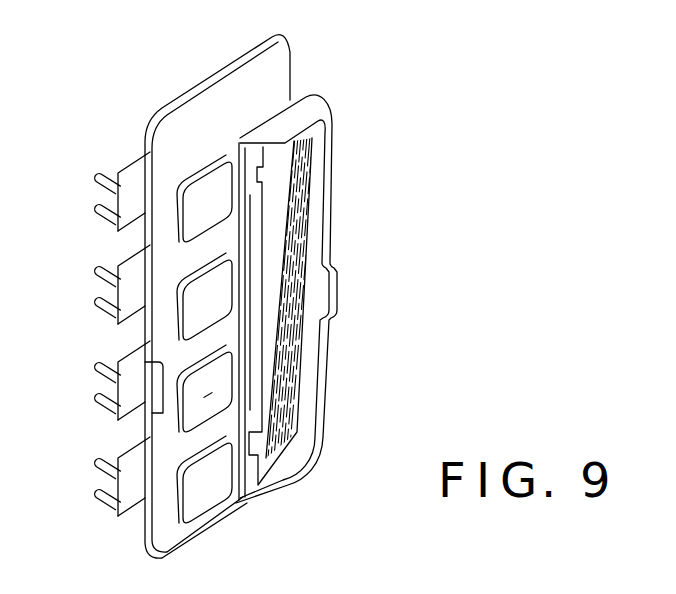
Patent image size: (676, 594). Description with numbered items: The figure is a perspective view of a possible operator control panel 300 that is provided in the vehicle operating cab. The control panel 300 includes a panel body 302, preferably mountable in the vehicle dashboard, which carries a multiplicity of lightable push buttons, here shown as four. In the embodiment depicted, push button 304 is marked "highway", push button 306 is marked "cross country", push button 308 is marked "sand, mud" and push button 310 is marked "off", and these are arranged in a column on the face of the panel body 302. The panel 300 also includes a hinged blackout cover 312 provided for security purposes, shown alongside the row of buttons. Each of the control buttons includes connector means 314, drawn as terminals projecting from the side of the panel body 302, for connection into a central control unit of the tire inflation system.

The control panel 300 is at (387, 103).
The panel body 302 is at (290, 65).
The push button 304 is at (185, 224).
The push button 306 is at (185, 320).
The push button 308 is at (185, 414).
The push button 310 is at (185, 506).
The hinged blackout cover 312 is at (312, 207).
The connector means 314 is at (100, 176).